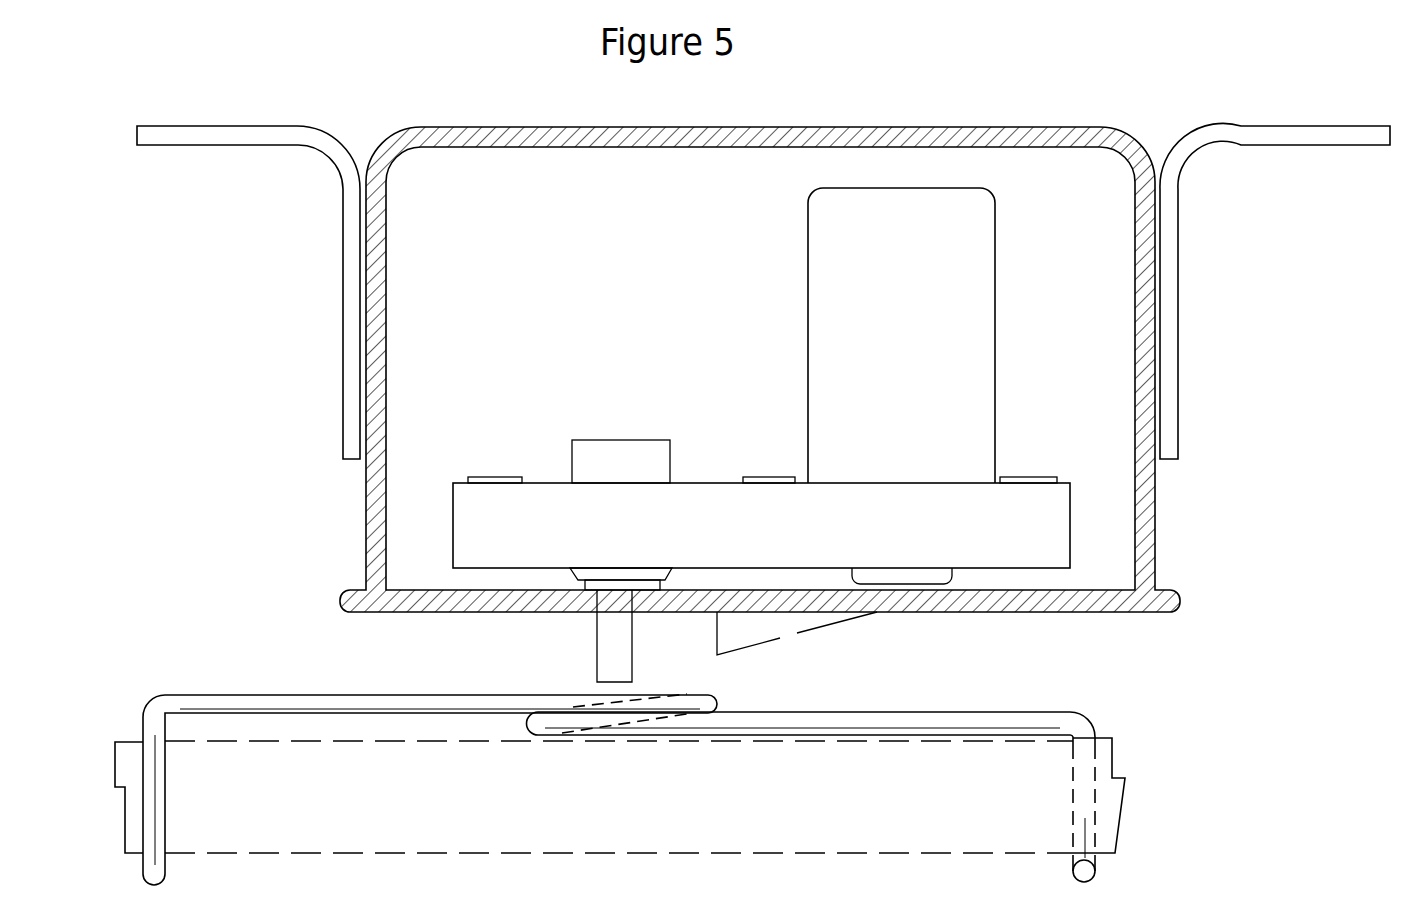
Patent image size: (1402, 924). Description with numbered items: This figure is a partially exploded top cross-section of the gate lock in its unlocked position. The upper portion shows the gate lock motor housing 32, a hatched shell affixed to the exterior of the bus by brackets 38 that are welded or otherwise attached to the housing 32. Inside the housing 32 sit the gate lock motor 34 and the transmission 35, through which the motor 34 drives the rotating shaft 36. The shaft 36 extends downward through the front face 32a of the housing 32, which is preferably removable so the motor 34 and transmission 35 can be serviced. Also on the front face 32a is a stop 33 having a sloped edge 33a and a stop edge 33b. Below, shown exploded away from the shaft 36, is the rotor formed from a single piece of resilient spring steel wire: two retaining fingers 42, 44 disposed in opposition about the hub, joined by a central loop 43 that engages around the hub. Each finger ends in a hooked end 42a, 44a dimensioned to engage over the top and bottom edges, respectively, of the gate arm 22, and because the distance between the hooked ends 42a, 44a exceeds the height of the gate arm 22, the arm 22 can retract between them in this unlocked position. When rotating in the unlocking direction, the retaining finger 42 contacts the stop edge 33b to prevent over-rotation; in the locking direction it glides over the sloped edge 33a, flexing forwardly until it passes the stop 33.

The gate arm 22 is at (504, 833).
The gate lock motor housing 32 is at (388, 325).
The front face 32a is at (433, 612).
The stop 33 is at (758, 638).
The sloped edge 33a is at (832, 628).
The stop edge 33b is at (716, 622).
The gate lock motor 34 is at (914, 342).
The transmission 35 is at (768, 535).
The rotating shaft 36 is at (610, 650).
The brackets 38 is at (228, 137).
The retaining finger 42 is at (403, 704).
The hooked end 42a is at (156, 815).
The central loop 43 is at (622, 720).
The retaining finger 44 is at (905, 720).
The hooked end 44a is at (1088, 808).